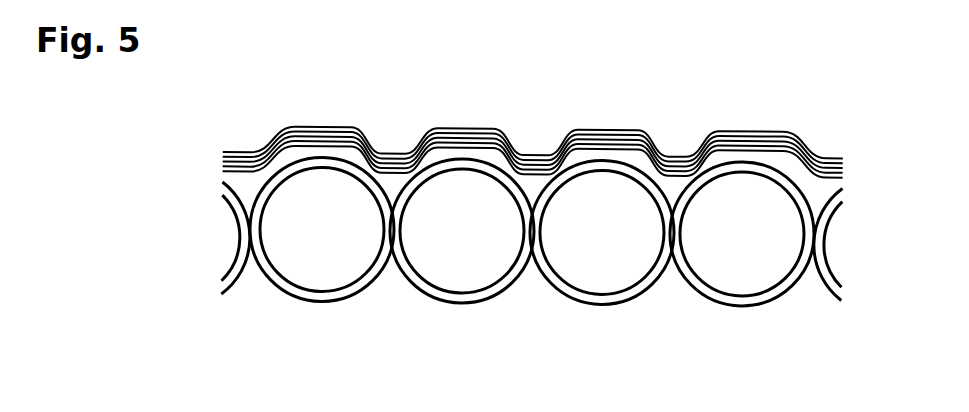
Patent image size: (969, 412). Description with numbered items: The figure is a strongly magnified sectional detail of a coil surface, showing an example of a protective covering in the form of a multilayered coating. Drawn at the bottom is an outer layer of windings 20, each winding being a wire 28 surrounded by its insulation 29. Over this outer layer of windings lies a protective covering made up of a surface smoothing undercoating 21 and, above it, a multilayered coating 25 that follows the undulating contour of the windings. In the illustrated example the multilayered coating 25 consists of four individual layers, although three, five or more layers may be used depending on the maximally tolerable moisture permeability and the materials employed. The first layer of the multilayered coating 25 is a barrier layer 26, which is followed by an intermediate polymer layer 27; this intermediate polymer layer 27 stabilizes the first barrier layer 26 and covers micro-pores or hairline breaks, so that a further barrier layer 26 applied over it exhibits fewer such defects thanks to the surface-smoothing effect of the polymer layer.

The outer layer of windings 20 is at (292, 321).
The surface smoothing undercoating 21 is at (525, 183).
The multilayered coating 25 is at (827, 150).
The barrier layer 26 is at (222, 159).
The intermediate polymer layer 27 is at (222, 153).
The wire 28 is at (328, 260).
The insulation 29 is at (277, 283).